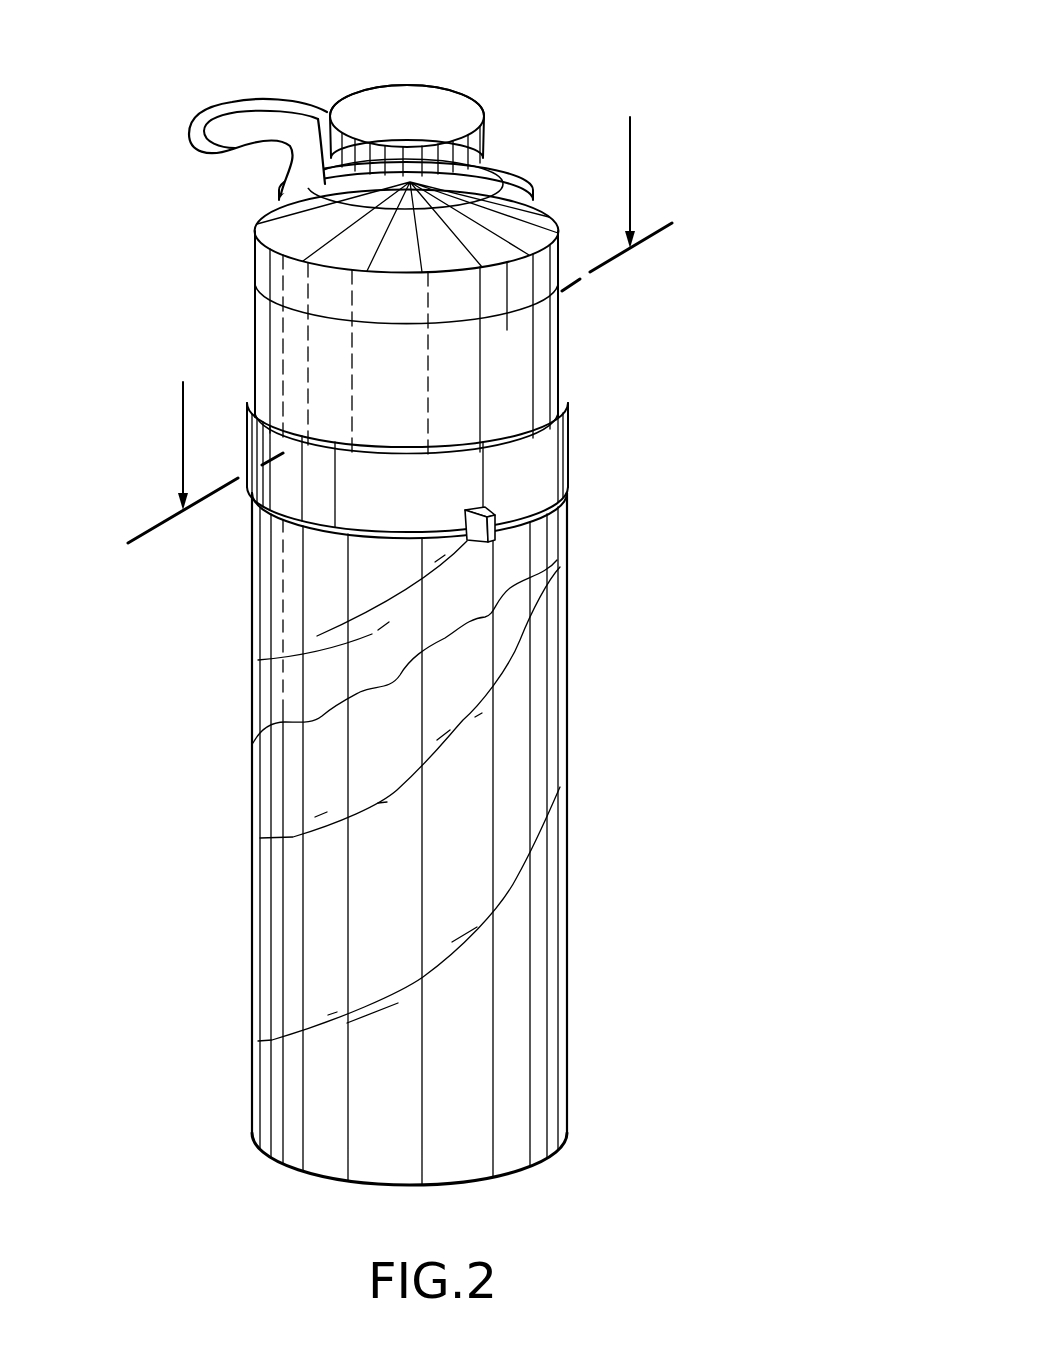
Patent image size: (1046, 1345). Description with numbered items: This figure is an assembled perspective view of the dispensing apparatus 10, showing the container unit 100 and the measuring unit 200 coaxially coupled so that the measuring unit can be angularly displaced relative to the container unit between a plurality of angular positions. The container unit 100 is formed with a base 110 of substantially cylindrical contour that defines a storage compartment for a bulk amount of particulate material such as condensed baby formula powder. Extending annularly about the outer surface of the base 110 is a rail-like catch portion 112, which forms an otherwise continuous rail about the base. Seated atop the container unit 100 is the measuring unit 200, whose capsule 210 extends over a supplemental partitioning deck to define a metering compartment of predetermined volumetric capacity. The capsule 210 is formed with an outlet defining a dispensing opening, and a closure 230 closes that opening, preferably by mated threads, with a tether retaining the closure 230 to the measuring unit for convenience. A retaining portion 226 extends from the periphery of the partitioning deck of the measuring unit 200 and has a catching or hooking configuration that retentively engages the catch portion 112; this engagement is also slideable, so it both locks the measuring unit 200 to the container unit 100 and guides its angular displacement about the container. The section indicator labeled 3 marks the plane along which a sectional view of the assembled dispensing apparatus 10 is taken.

The dispensing apparatus 10 is at (479, 593).
The container unit 100 is at (538, 794).
The base 110 is at (530, 700).
The catch portion 112 is at (565, 491).
The measuring unit 200 is at (491, 229).
The capsule 210 is at (532, 396).
The retaining portion 226 is at (487, 538).
The closure 230 is at (433, 110).
The section line for FIG. 3 is at (400, 330).